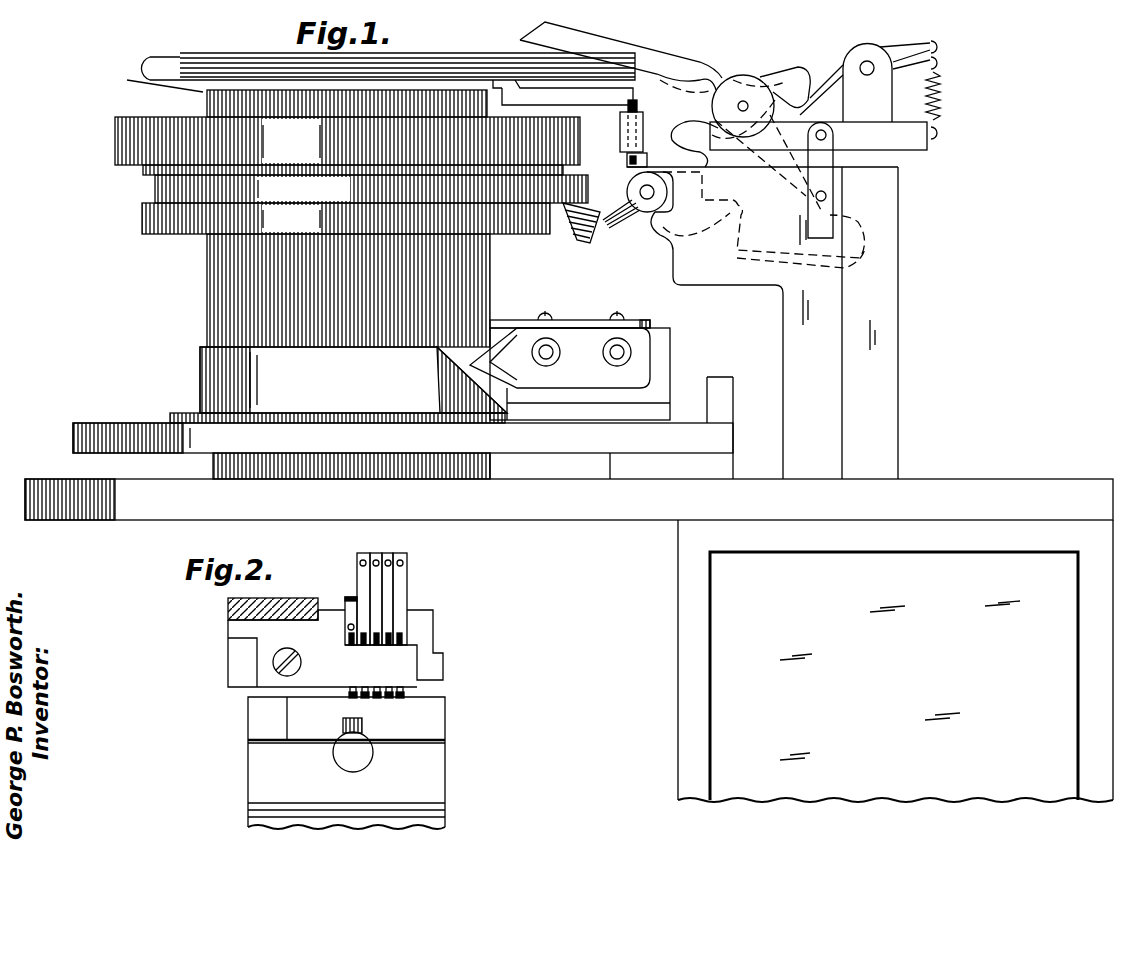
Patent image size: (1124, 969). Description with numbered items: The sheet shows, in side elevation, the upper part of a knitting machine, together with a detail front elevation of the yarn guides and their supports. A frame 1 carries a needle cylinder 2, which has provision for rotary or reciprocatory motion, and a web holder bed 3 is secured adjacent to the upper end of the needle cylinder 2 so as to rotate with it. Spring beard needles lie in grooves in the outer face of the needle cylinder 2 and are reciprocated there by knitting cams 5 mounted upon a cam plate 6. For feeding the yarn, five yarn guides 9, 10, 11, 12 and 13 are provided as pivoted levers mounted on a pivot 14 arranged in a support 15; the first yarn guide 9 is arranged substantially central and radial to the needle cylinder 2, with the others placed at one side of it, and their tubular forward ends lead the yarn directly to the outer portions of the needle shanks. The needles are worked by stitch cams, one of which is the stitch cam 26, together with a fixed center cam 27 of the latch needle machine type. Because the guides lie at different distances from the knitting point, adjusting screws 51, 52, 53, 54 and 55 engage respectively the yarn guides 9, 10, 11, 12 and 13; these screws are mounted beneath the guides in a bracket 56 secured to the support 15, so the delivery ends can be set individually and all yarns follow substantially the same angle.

In FIG. 1, the frame 1 is at (688, 538).
In FIG. 1, the needle cylinder 2 is at (497, 82).
In FIG. 1, the web holder bed 3 is at (150, 215).
In FIG. 1, the knitting cams 5 is at (647, 305).
In FIG. 1, the cam plate 6 is at (105, 436).
In FIG. 1, the yarn guide 9 is at (597, 97).
In FIG. 2, the yarn guide 9 is at (350, 597).
In FIG. 2, the yarn guide 10 is at (363, 556).
In FIG. 2, the yarn guide 11 is at (377, 556).
In FIG. 2, the yarn guide 12 is at (389, 556).
In FIG. 1, the yarn guide 13 is at (637, 57).
In FIG. 2, the yarn guide 13 is at (402, 556).
In FIG. 1, the pivot 14 is at (747, 101).
In FIG. 1, the support 15 is at (542, 62).
In FIG. 2, the support 15 is at (228, 656).
In FIG. 1, the stitch cam 26 is at (482, 362).
In FIG. 1, the fixed center cam 27 is at (514, 320).
In FIG. 2, the adjusting screw 51 is at (350, 635).
In FIG. 2, the adjusting screw 52 is at (365, 632).
In FIG. 2, the adjusting screw 53 is at (377, 633).
In FIG. 2, the adjusting screw 54 is at (388, 633).
In FIG. 1, the adjusting screw 55 is at (627, 162).
In FIG. 2, the adjusting screw 55 is at (399, 634).
In FIG. 1, the bracket 56 is at (620, 145).
In FIG. 2, the bracket 56 is at (272, 673).